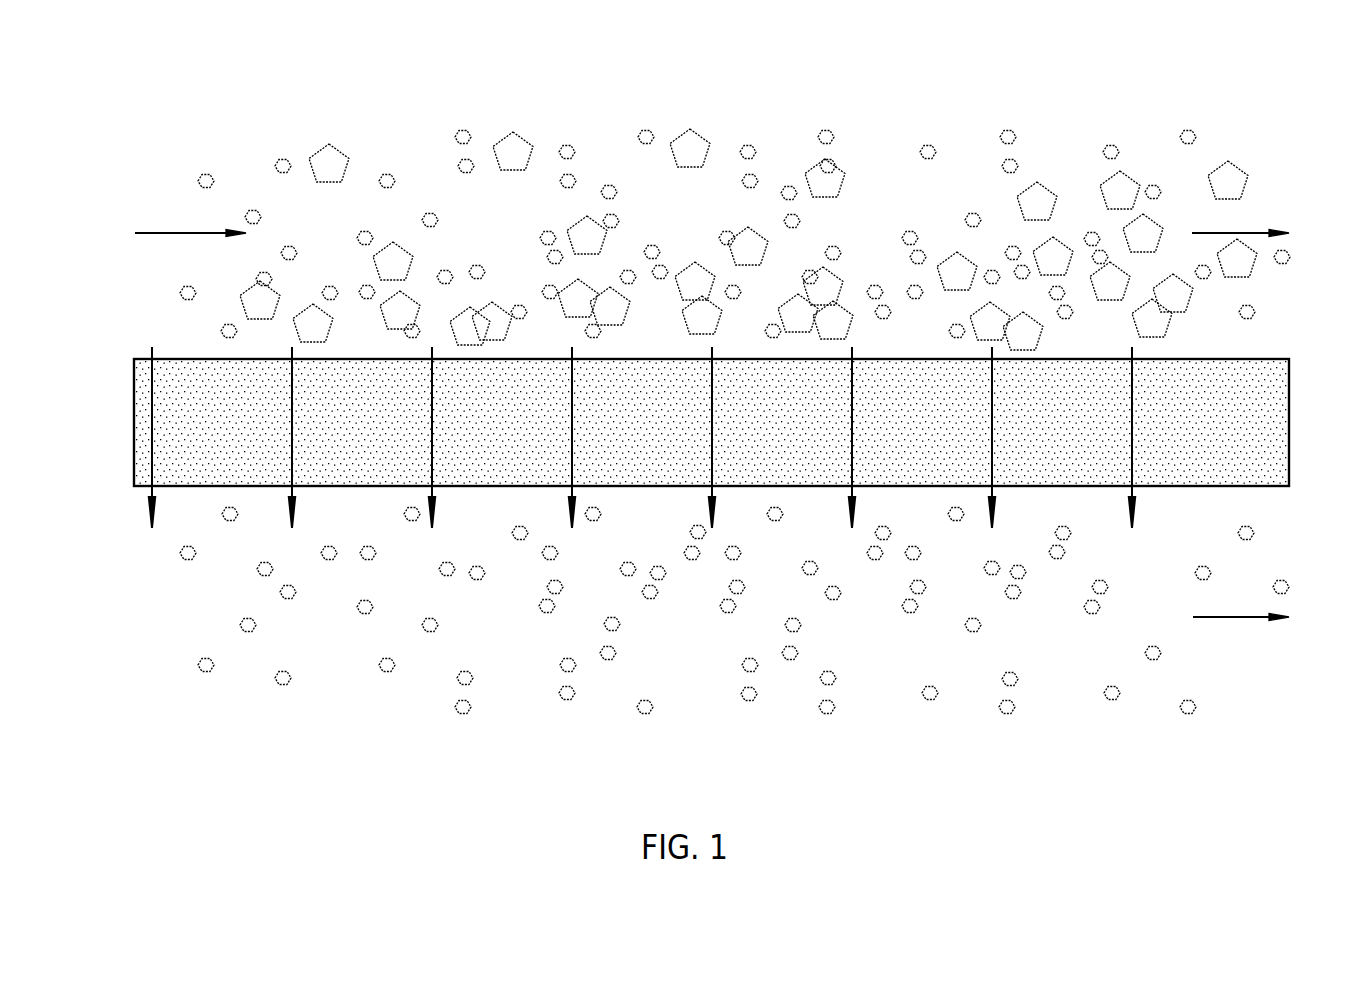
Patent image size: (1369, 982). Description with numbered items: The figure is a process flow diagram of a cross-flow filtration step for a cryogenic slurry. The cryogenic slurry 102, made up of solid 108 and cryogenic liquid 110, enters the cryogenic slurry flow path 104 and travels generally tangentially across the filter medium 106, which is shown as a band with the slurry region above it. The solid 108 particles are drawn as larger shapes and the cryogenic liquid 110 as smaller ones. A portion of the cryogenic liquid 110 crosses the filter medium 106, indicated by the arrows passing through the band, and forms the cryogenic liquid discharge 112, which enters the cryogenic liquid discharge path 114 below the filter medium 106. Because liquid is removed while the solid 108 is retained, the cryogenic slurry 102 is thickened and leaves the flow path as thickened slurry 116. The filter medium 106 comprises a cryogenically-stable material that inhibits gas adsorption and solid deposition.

The cryogenic slurry 102 is at (164, 233).
The cryogenic slurry flow path 104 is at (903, 157).
The filter medium 106 is at (142, 385).
The solid 108 is at (698, 148).
The cryogenic liquid 110 is at (565, 150).
The cryogenic liquid discharge 112 is at (1267, 617).
The cryogenic liquid discharge path 114 is at (867, 660).
The thickened slurry 116 is at (1266, 233).